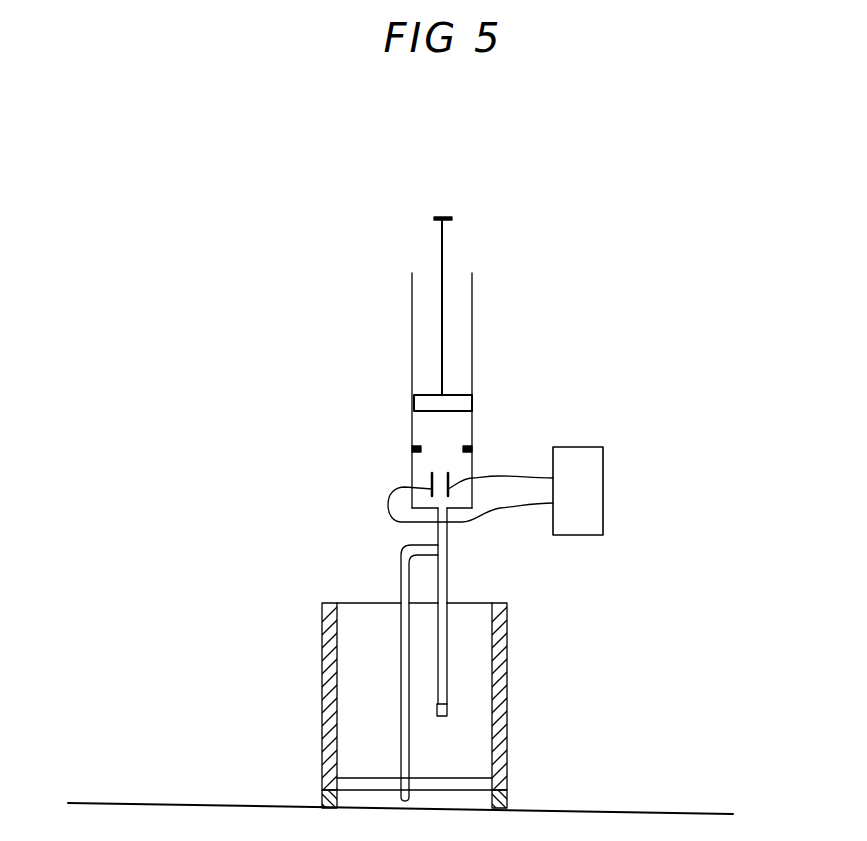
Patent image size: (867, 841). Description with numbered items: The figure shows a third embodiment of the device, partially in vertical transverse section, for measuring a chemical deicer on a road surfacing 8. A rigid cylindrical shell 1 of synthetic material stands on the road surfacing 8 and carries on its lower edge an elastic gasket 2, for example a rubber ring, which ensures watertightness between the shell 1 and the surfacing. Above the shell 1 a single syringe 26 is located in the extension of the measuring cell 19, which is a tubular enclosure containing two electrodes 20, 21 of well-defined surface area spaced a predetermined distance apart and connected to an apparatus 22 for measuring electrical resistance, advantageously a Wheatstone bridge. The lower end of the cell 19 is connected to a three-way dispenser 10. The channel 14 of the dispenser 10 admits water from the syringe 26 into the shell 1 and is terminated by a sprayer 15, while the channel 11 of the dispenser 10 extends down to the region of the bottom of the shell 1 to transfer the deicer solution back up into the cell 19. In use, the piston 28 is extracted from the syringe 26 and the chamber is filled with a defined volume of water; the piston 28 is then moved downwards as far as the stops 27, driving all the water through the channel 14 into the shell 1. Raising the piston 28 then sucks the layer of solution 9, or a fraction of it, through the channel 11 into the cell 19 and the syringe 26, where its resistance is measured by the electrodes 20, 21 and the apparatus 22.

The rigid cylindrical shell 1 is at (507, 689).
The elastic gasket 2 is at (507, 800).
The base surface 8 is at (273, 804).
The layer of solution 9 is at (365, 776).
The three-way dispenser 10 is at (450, 553).
The channel 11 is at (400, 660).
The channel 14 is at (446, 640).
The sprayer 15 is at (446, 712).
The measuring cell 19 is at (411, 455).
The electrode 20 is at (449, 492).
The electrode 21 is at (432, 474).
The apparatus for measuring electrical resistance 22 is at (495, 491).
The syringe 26 is at (473, 345).
The stops 27 is at (465, 447).
The piston 28 is at (462, 404).